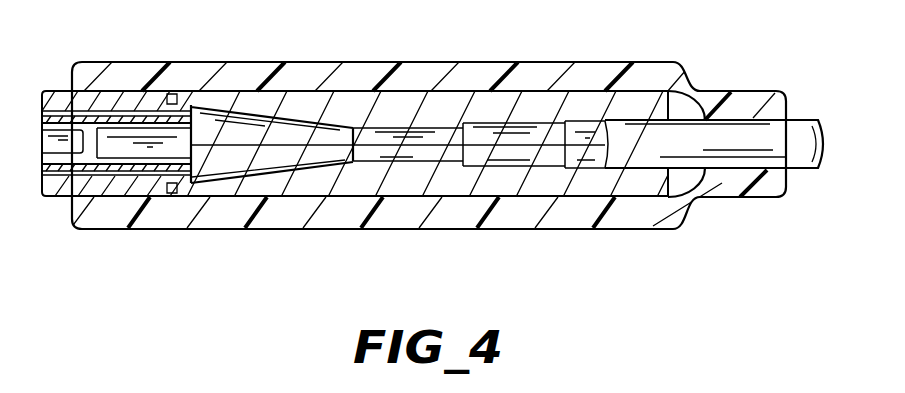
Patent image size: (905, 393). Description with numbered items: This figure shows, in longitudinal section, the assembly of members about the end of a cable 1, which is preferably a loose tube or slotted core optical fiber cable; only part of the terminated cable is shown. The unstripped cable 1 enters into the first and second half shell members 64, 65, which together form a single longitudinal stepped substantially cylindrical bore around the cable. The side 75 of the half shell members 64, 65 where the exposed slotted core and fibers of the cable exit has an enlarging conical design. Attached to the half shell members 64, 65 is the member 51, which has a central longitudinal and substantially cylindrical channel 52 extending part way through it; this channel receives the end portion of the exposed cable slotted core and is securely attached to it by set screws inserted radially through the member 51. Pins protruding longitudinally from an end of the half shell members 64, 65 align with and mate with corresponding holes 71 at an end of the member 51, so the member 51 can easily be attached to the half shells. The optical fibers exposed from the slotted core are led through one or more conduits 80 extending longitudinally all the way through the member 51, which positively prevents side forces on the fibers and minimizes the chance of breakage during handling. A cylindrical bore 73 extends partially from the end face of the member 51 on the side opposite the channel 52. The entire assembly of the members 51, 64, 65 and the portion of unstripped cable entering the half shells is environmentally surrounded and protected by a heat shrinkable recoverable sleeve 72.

The slotted core cable 1 is at (713, 150).
The member 51 is at (107, 200).
The central longitudinal channel 52 is at (198, 150).
The first half shell member 64 is at (583, 204).
The second half shell member 65 is at (589, 85).
The holes 71 is at (173, 95).
The heat shrinkable recoverable sleeve 72 is at (721, 183).
The cylindrical bore 73 is at (72, 134).
The side of the half shell members 75 is at (313, 137).
The conduits 80 is at (180, 172).